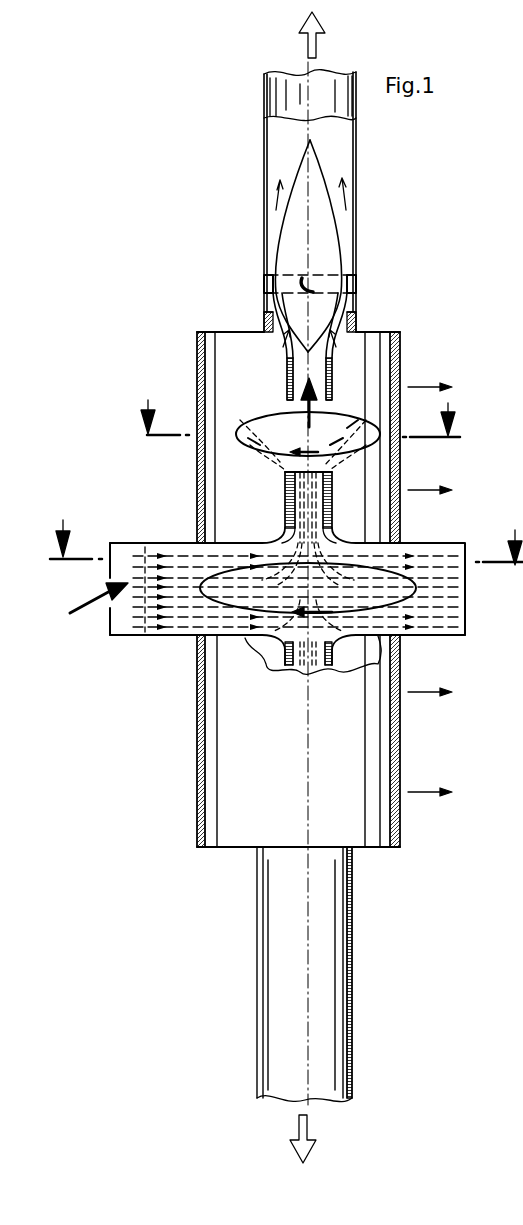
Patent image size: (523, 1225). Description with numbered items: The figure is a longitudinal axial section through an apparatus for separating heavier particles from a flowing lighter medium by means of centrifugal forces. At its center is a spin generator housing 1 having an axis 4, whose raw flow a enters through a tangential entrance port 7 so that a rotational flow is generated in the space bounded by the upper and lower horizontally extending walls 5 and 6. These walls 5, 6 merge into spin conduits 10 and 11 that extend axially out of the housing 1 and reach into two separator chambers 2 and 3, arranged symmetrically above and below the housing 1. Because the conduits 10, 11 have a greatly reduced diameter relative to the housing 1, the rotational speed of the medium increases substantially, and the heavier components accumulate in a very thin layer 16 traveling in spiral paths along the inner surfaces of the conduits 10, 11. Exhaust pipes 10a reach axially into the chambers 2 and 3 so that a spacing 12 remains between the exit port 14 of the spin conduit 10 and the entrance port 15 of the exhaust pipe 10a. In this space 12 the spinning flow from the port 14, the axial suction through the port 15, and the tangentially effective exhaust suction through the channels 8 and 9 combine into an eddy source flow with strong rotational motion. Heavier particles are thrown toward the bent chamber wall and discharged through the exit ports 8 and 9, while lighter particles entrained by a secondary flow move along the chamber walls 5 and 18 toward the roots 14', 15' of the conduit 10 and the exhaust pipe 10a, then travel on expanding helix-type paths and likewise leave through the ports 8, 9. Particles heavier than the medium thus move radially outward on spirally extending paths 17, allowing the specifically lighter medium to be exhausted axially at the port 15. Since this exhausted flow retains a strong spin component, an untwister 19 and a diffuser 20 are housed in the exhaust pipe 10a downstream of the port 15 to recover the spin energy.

The spin generator housing 1 is at (159, 637).
The separator chamber 2 is at (197, 365).
The separator chamber 3 is at (218, 752).
The axis 4 is at (305, 590).
The upper horizontally extending wall 5 is at (183, 542).
The lower horizontally extending wall 6 is at (223, 638).
The entrance port 7 is at (115, 620).
The exit port 8 is at (399, 335).
The exit port 9 is at (399, 758).
The spin conduit 10 is at (330, 507).
The exhaust pipe 10a is at (332, 378).
The spin conduit 11 is at (335, 652).
The spacing 12 is at (322, 430).
The exit port 14 is at (359, 504).
The root 14' is at (292, 522).
The entrance port 15 is at (285, 360).
The root 15' is at (266, 333).
The thin layer 16 is at (290, 528).
The spirally extending paths 17 is at (272, 462).
The chamber wall 18 is at (205, 332).
The untwister 19 is at (268, 284).
The diffuser 20 is at (351, 203).
The raw flow a is at (80, 615).